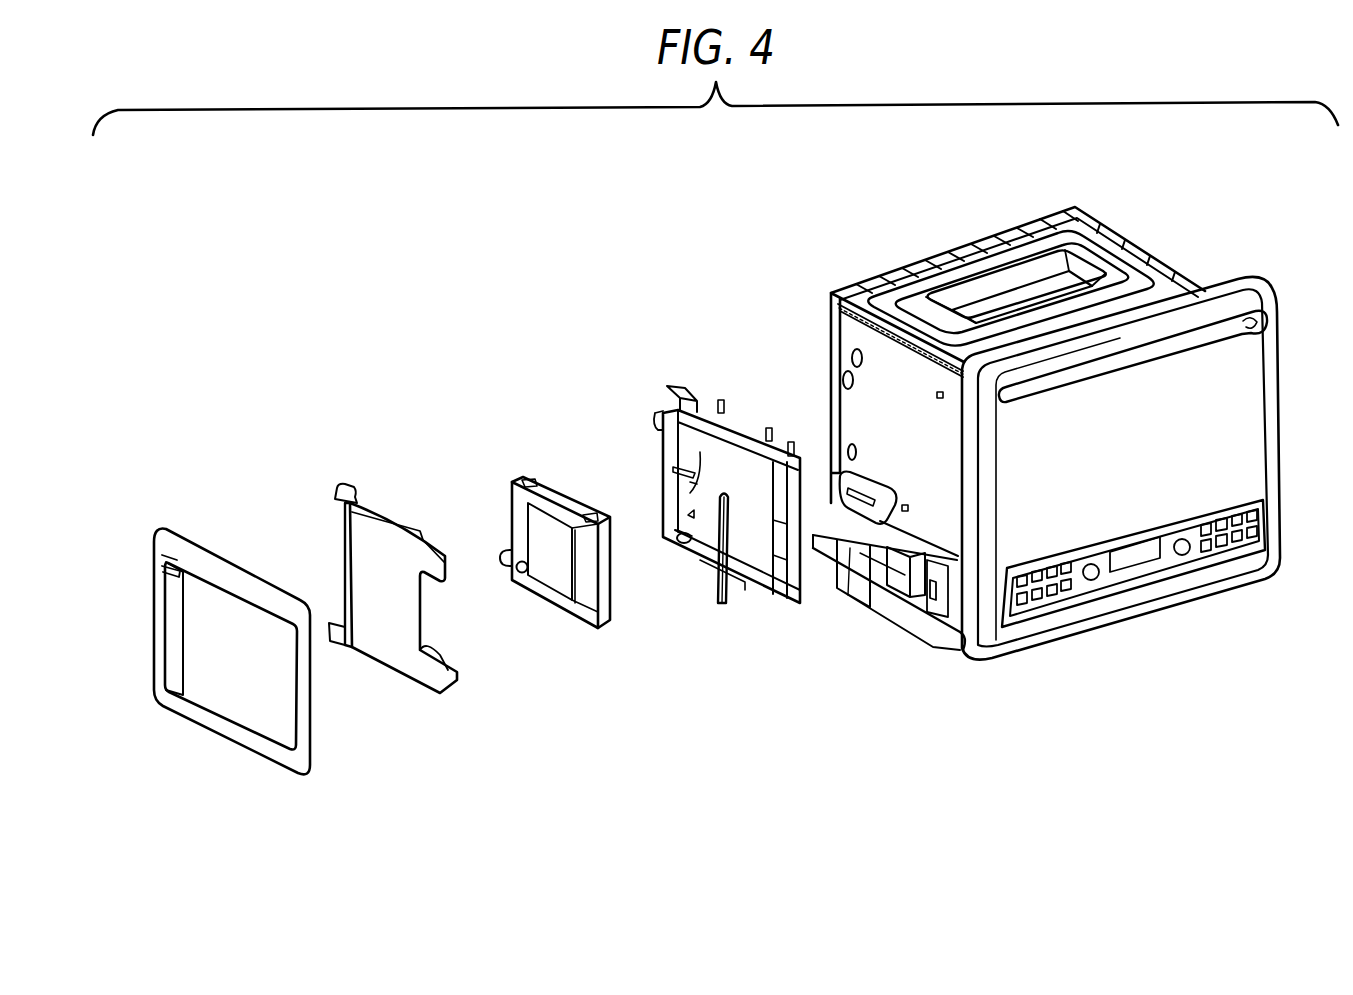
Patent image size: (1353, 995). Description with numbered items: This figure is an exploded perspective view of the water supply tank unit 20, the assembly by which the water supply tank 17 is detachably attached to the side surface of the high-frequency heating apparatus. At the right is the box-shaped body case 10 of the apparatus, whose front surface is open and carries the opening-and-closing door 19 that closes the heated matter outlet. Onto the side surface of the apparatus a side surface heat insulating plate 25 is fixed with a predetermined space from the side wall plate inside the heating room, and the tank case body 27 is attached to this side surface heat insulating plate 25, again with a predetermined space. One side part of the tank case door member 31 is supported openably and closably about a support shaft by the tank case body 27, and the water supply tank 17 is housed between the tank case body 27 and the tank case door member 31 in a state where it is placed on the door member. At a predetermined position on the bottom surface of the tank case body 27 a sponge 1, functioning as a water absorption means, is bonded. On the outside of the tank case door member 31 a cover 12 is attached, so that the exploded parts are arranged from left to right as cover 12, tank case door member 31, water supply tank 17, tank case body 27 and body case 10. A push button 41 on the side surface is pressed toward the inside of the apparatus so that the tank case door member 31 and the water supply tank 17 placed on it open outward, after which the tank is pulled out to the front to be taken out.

The body case 10 is at (1100, 214).
The side surface heat insulating plate 25 is at (843, 329).
The front door 19 is at (1282, 344).
The cover 12 is at (157, 512).
The tank case door member 31 is at (334, 475).
The water supply tank 17 is at (532, 465).
The tank case body 27 is at (705, 487).
The sponge 1 is at (679, 541).
The push button 41 is at (729, 597).
The water supply tank unit 20 is at (565, 692).